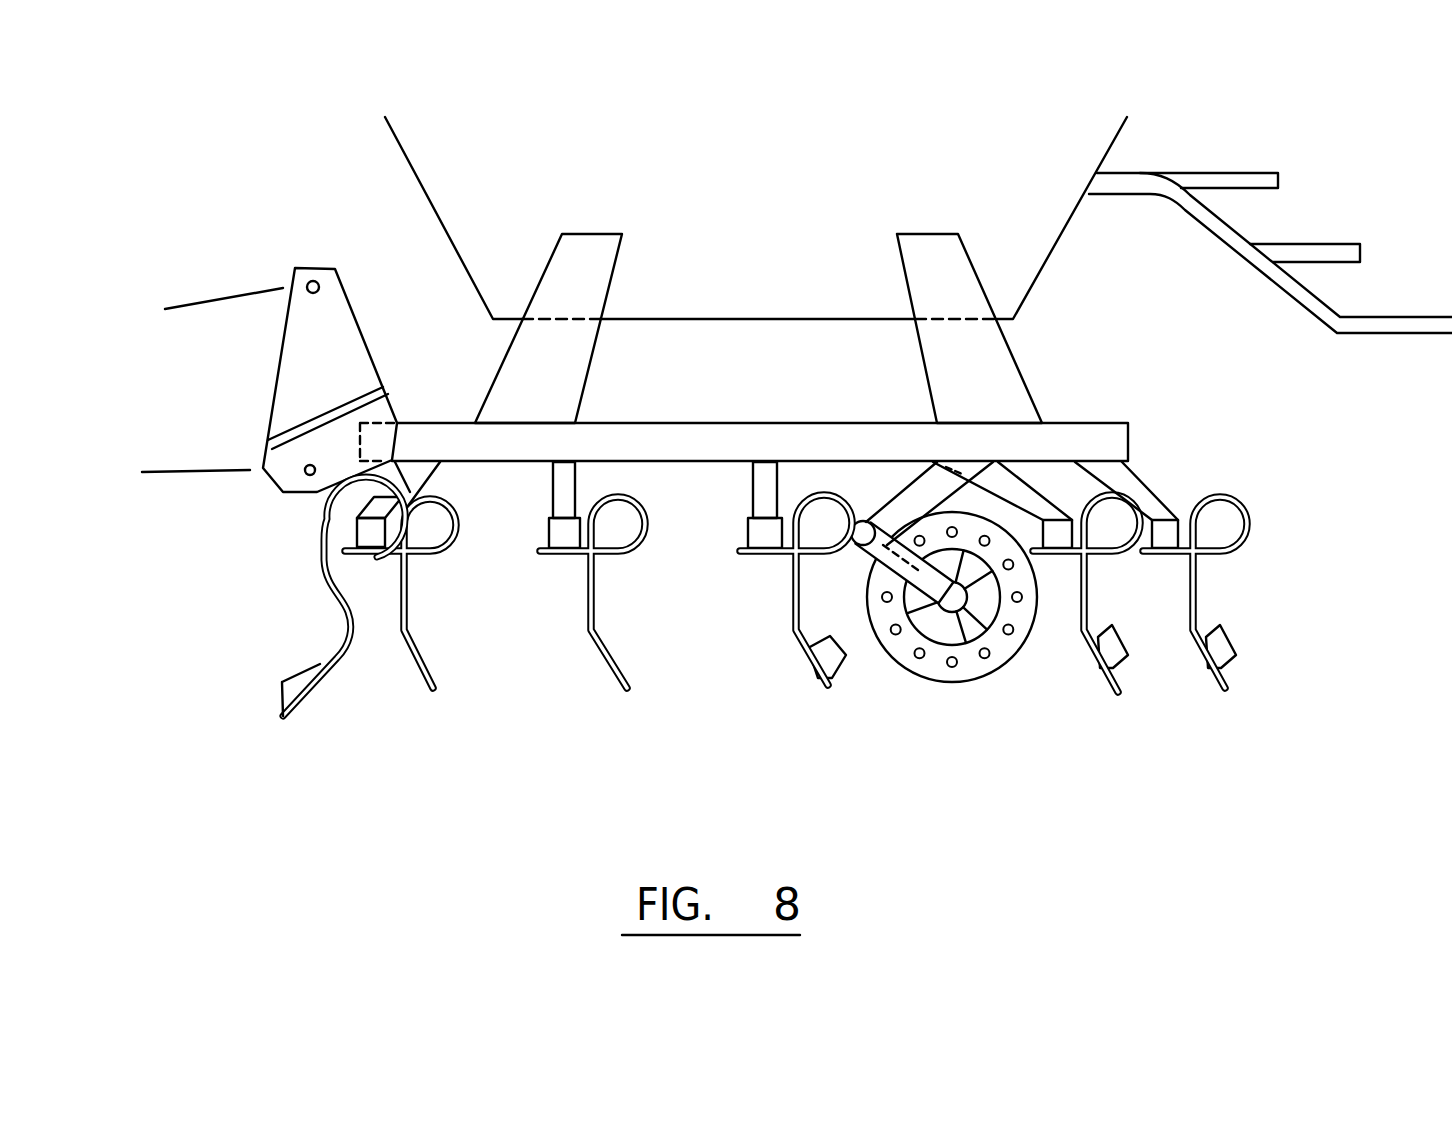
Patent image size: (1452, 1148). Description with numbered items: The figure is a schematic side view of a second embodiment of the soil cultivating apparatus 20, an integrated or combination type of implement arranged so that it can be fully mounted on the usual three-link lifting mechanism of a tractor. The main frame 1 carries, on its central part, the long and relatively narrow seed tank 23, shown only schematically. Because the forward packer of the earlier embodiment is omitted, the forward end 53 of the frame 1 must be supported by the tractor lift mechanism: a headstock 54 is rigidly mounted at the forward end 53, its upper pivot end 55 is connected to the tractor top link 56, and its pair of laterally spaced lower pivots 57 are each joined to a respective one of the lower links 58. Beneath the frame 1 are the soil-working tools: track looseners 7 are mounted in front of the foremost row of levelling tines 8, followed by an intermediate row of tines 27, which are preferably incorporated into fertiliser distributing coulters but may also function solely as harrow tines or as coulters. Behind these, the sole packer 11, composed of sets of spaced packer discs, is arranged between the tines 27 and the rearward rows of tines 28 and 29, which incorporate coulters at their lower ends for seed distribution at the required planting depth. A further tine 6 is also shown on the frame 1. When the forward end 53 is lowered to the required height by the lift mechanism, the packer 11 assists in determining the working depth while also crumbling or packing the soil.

The main frame 1 is at (730, 440).
The soil cultivating apparatus 20 is at (855, 227).
The seed tank 23 is at (772, 197).
The forward end of the frame 53 is at (412, 445).
The headstock 54 is at (315, 359).
The upper pivot end 55 is at (313, 281).
The tractor top link 56 is at (208, 298).
The lower pivots 57 is at (306, 477).
The lower links 58 is at (202, 472).
The track looseners 7 is at (297, 687).
The levelling tines 8 is at (418, 668).
The spring tine 6 is at (603, 658).
The tines 27 is at (805, 655).
The packer 11 is at (940, 670).
The tines 28 is at (1097, 662).
The tines 29 is at (1212, 668).